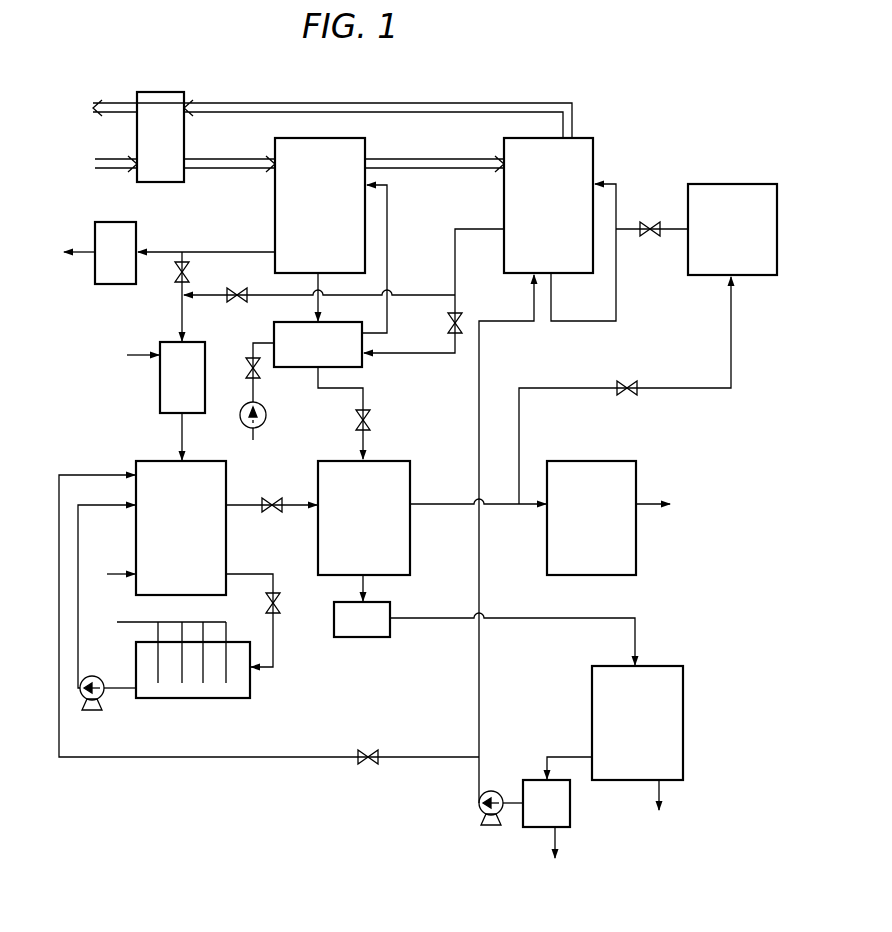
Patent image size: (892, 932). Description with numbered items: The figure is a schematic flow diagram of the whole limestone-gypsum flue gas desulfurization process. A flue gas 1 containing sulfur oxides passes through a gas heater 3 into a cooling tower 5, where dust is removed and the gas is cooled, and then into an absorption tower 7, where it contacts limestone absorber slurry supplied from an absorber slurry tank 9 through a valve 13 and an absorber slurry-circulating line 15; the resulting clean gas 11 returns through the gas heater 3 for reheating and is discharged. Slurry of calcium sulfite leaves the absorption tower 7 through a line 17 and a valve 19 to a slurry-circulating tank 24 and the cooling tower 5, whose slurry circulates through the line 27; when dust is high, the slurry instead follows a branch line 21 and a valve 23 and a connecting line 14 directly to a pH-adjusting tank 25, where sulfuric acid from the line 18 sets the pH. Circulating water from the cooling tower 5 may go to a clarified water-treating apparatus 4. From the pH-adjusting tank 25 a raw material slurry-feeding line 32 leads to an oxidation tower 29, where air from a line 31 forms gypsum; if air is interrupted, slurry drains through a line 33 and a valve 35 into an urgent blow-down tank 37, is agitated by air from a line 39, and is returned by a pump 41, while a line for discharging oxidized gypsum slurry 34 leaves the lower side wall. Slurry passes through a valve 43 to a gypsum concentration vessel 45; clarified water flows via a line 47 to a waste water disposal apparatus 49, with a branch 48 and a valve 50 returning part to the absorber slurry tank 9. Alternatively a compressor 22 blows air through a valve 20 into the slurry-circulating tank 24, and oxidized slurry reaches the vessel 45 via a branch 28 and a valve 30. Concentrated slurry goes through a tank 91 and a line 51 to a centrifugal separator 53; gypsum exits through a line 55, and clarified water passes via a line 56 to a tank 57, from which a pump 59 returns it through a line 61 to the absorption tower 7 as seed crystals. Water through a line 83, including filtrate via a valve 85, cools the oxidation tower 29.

The flue gas 1 is at (119, 168).
The gas heater 3 is at (168, 147).
The clarified water-treating apparatus 4 is at (137, 237).
The cooling tower 5 is at (312, 219).
The absorption tower 7 is at (540, 219).
The absorber slurry tank 9 is at (725, 249).
The clean gas 11 is at (336, 104).
The valve 13 is at (650, 222).
The line 14 is at (182, 309).
The absorber slurry-circulating line 15 is at (560, 323).
The line 17 is at (470, 229).
The line 18 is at (137, 355).
The valve 19 is at (461, 318).
The valve 20 is at (260, 371).
The branch line 21 is at (414, 297).
The compressor 22 is at (266, 416).
The valve 23 is at (237, 288).
The slurry-circulating tank 24 is at (305, 356).
The pH-adjusting tank 25 is at (169, 389).
The line 27 is at (388, 264).
The branch 28 is at (364, 397).
The oxidation tower 29 is at (163, 539).
The valve 30 is at (371, 420).
The line 31 is at (113, 573).
The raw material slurry-feeding line 32 is at (182, 432).
The line 33 is at (246, 574).
The line for discharging oxidized gypsum slurry 34 is at (242, 507).
The valve 35 is at (283, 604).
The urgent blow-down tank 37 is at (251, 696).
The line 39 is at (130, 622).
The pump 41 is at (104, 700).
The valve 43 is at (273, 497).
The gypsum concentration vessel 45 is at (350, 532).
The line 47 is at (436, 502).
The branch 48 is at (520, 408).
The waste water disposal apparatus 49 is at (577, 532).
The valve 50 is at (629, 382).
The line 51 is at (443, 620).
The centrifugal separator 53 is at (625, 734).
The line 55 is at (661, 787).
The line 56 is at (577, 757).
The tank 57 is at (571, 800).
The pump 59 is at (479, 806).
The line 61 is at (480, 347).
The line 83 is at (100, 473).
The valve 85 is at (370, 752).
The tank 91 is at (373, 638).